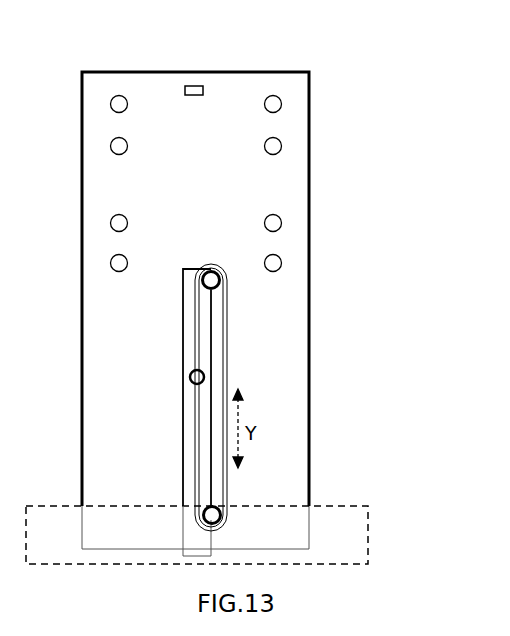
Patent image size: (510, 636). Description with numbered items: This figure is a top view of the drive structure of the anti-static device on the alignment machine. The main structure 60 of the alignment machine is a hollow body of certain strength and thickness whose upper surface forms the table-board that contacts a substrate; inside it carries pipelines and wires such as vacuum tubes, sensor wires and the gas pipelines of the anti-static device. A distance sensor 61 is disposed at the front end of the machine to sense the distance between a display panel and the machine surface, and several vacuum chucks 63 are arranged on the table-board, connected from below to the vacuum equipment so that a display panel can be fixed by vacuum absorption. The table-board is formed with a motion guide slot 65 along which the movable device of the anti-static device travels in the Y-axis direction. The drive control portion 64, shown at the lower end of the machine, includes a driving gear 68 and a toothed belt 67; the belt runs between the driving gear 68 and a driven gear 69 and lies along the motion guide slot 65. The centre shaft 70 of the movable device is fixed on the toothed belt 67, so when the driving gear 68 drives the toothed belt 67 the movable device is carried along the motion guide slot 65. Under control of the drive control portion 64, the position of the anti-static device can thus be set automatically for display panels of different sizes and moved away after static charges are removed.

The main structure 60 is at (309, 190).
The distance sensor 61 is at (193, 86).
The vacuum chuck 63 is at (273, 146).
The drive control portion 64 is at (352, 533).
The motion guide slot 65 is at (183, 430).
The toothed belt 67 is at (228, 355).
The driving gear 68 is at (212, 515).
The driven gear 69 is at (211, 280).
The centre shaft 70 is at (197, 377).